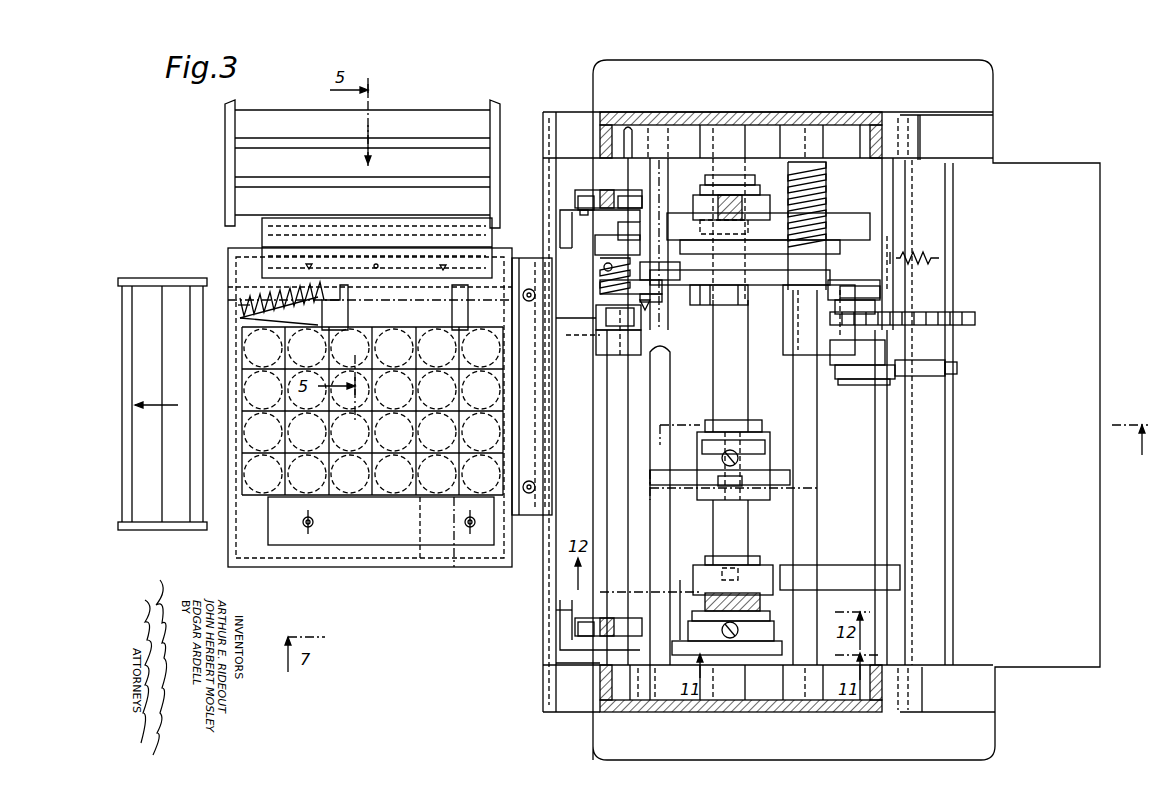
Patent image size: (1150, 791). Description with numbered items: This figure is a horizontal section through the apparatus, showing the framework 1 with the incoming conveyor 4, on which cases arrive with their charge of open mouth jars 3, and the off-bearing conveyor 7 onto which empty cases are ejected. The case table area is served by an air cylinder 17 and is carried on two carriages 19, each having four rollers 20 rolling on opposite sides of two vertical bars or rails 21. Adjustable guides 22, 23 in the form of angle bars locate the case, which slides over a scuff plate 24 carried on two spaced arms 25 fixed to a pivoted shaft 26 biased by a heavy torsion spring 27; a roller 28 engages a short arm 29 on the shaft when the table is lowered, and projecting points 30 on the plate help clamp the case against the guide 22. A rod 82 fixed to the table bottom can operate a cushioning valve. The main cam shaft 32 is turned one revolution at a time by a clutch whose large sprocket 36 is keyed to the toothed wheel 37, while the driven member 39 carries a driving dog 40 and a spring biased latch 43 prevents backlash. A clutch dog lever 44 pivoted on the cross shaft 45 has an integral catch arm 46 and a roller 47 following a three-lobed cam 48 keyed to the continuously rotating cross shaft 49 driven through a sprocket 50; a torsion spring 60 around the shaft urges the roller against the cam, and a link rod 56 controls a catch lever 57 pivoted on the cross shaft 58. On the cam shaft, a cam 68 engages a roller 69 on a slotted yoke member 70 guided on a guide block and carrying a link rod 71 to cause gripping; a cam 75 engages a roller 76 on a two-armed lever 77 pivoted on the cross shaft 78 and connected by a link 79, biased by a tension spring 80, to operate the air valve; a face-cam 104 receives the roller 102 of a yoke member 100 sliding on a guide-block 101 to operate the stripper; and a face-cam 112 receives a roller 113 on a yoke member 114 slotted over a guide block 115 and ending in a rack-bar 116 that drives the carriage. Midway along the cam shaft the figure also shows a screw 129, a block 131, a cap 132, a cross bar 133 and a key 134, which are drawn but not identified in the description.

The framework 1 is at (858, 120).
The open mouth jars 3 is at (388, 492).
The conveyor 4 is at (432, 106).
The off-bearing conveyor 7 is at (136, 272).
The air cylinder 17 is at (372, 411).
The carriages 19 is at (556, 205).
The rollers 20 is at (586, 202).
The vertical bars or rails 21 is at (604, 190).
The adjustable guide 22 is at (325, 500).
The adjustable guide 23 is at (512, 428).
The scuff plate 24 is at (262, 266).
The spaced arms 25 is at (342, 290).
The pivoted shaft 26 is at (262, 305).
The torsion spring 27 is at (250, 294).
The roller 28 is at (598, 350).
The short arm 29 is at (593, 332).
The projecting points 30 is at (378, 266).
The main cam shaft 32 is at (742, 394).
The large sprocket 36 is at (852, 282).
The toothed wheel 37 is at (692, 314).
The driven member 39 is at (674, 505).
The driving dog 40 is at (770, 308).
The spring biased latch 43 is at (600, 312).
The clutch dog lever 44 is at (828, 352).
The cross shaft 45 is at (808, 445).
The catch arm 46 is at (735, 316).
The roller 47 is at (850, 372).
The three-lobed cam 48 is at (940, 372).
The cross shaft 49 is at (905, 445).
The sprocket 50 is at (975, 320).
The link rod 56 is at (598, 268).
The catch lever 57 is at (672, 302).
The cross shaft 58 is at (618, 458).
The torsion spring 60 is at (826, 186).
The cam 68 is at (768, 640).
The roller 69 is at (738, 656).
The yoke member 70 is at (770, 630).
The link rod 71 is at (732, 620).
The cam 75 is at (750, 262).
The roller 76 is at (828, 258).
The two-armed lever 77 is at (867, 265).
The cross shaft 78 is at (875, 472).
The link 79 is at (566, 300).
The tension spring 80 is at (913, 260).
The rod 82 is at (503, 330).
The yoke member 100 is at (756, 574).
The guide-block 101 is at (688, 575).
The roller 102 is at (730, 556).
The face-cam 104 is at (846, 565).
The face-cam 112 is at (875, 213).
The roller 113 is at (710, 224).
The yoke member 114 is at (697, 184).
The guide block 115 is at (762, 200).
The rack-bar 116 is at (730, 175).
The screw 129 is at (722, 456).
The block 131 is at (774, 458).
The cap 132 is at (742, 448).
The bar 133 is at (786, 488).
The key 134 is at (722, 480).